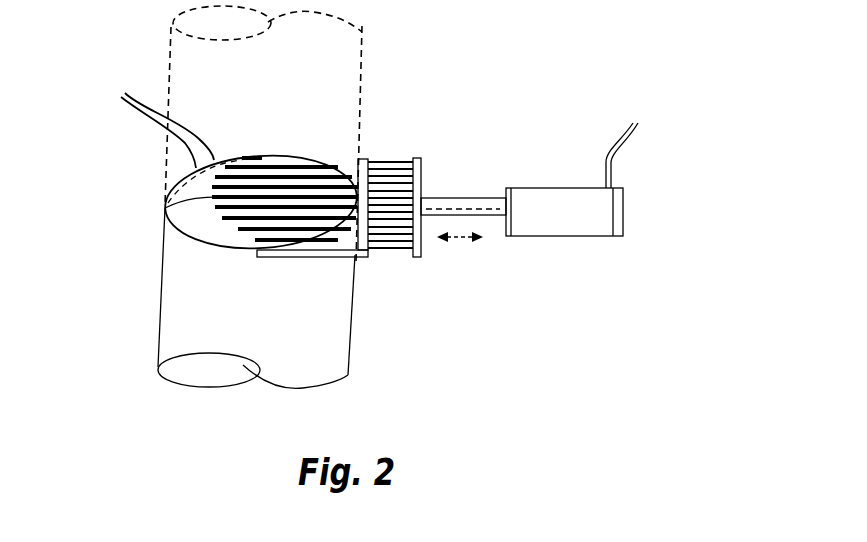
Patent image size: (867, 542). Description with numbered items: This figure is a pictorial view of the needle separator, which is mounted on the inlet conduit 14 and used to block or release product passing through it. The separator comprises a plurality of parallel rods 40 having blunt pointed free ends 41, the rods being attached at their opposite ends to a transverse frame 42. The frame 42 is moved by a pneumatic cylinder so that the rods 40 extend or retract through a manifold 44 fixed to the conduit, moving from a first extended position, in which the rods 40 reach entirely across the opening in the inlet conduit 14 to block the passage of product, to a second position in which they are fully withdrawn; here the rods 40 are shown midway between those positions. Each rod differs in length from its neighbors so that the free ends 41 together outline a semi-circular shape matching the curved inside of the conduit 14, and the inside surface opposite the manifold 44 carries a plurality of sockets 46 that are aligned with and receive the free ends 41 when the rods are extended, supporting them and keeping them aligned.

The inlet conduit 14 is at (188, 292).
The parallel rods 40 is at (275, 203).
The blunt pointed free ends 41 is at (165, 210).
The transverse frame 42 is at (423, 183).
The manifold 44 is at (358, 257).
The sockets 46 is at (153, 117).